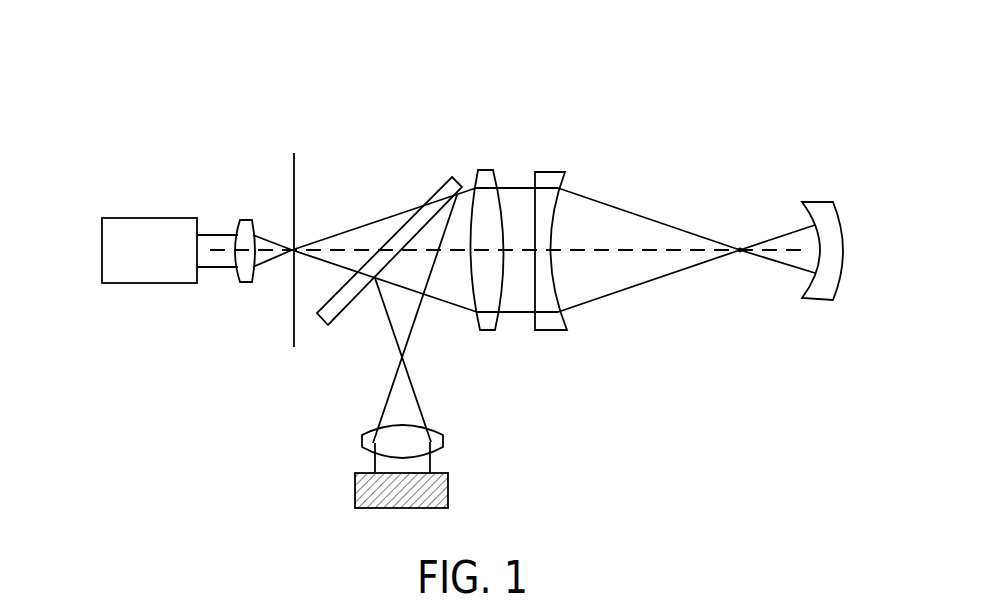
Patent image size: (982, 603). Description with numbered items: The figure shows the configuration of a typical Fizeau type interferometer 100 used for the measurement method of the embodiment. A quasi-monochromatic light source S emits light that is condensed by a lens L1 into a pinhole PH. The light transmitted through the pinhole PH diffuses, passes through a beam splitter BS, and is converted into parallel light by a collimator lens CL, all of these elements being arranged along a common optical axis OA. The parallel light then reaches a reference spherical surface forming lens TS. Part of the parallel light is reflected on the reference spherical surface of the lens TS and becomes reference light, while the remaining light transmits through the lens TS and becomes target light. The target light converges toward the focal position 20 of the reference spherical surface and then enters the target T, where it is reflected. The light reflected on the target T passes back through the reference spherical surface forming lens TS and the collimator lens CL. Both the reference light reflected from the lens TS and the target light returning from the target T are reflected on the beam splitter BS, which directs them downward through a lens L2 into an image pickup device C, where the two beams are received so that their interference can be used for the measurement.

The interferometer 100 is at (820, 36).
The quasi-monochromatic light source S is at (150, 233).
The lens L1 is at (242, 225).
The pinhole PH is at (295, 165).
The beam splitter BS is at (448, 178).
The collimator lens CL is at (480, 175).
The reference spherical surface forming lens TS is at (547, 178).
The optical axis OA is at (670, 248).
The focal position of the reference spherical surface 20 is at (738, 248).
The target T is at (820, 212).
The lens L2 is at (437, 440).
The image pickup device C is at (447, 473).